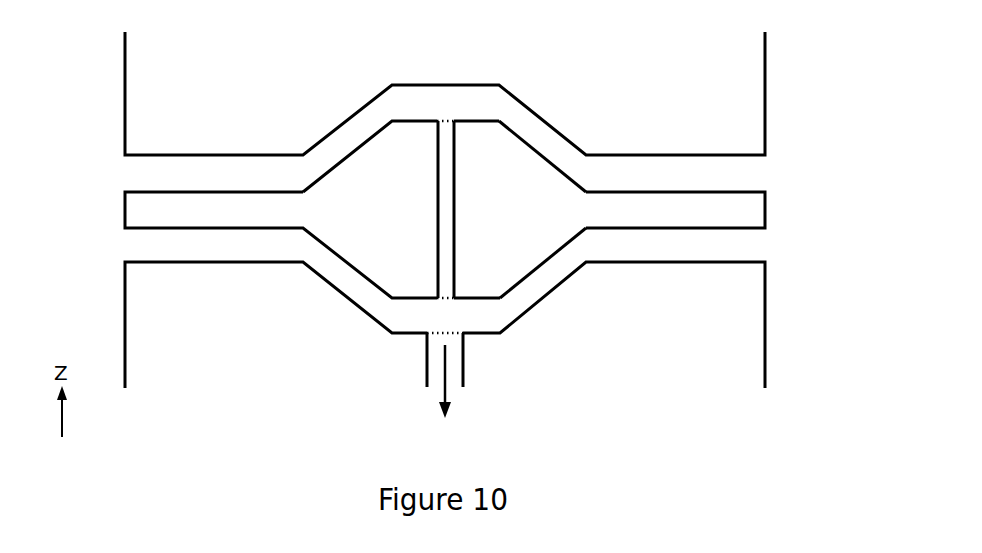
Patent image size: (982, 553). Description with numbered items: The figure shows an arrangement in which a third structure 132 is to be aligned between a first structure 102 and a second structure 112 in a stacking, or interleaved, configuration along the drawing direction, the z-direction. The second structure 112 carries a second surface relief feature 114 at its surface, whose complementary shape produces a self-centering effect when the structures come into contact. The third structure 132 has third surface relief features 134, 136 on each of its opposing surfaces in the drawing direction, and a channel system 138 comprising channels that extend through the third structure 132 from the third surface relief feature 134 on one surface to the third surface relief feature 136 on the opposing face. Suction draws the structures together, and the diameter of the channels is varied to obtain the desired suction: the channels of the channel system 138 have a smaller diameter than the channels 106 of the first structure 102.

The first structure 102 is at (125, 275).
The channels 106 is at (427, 362).
The second structure 112 is at (125, 113).
The second surface relief feature 114 is at (565, 135).
The third structure 132 is at (125, 208).
The third surface relief feature 134 is at (513, 283).
The third surface relief feature 136 is at (533, 150).
The channel system 138 is at (437, 195).